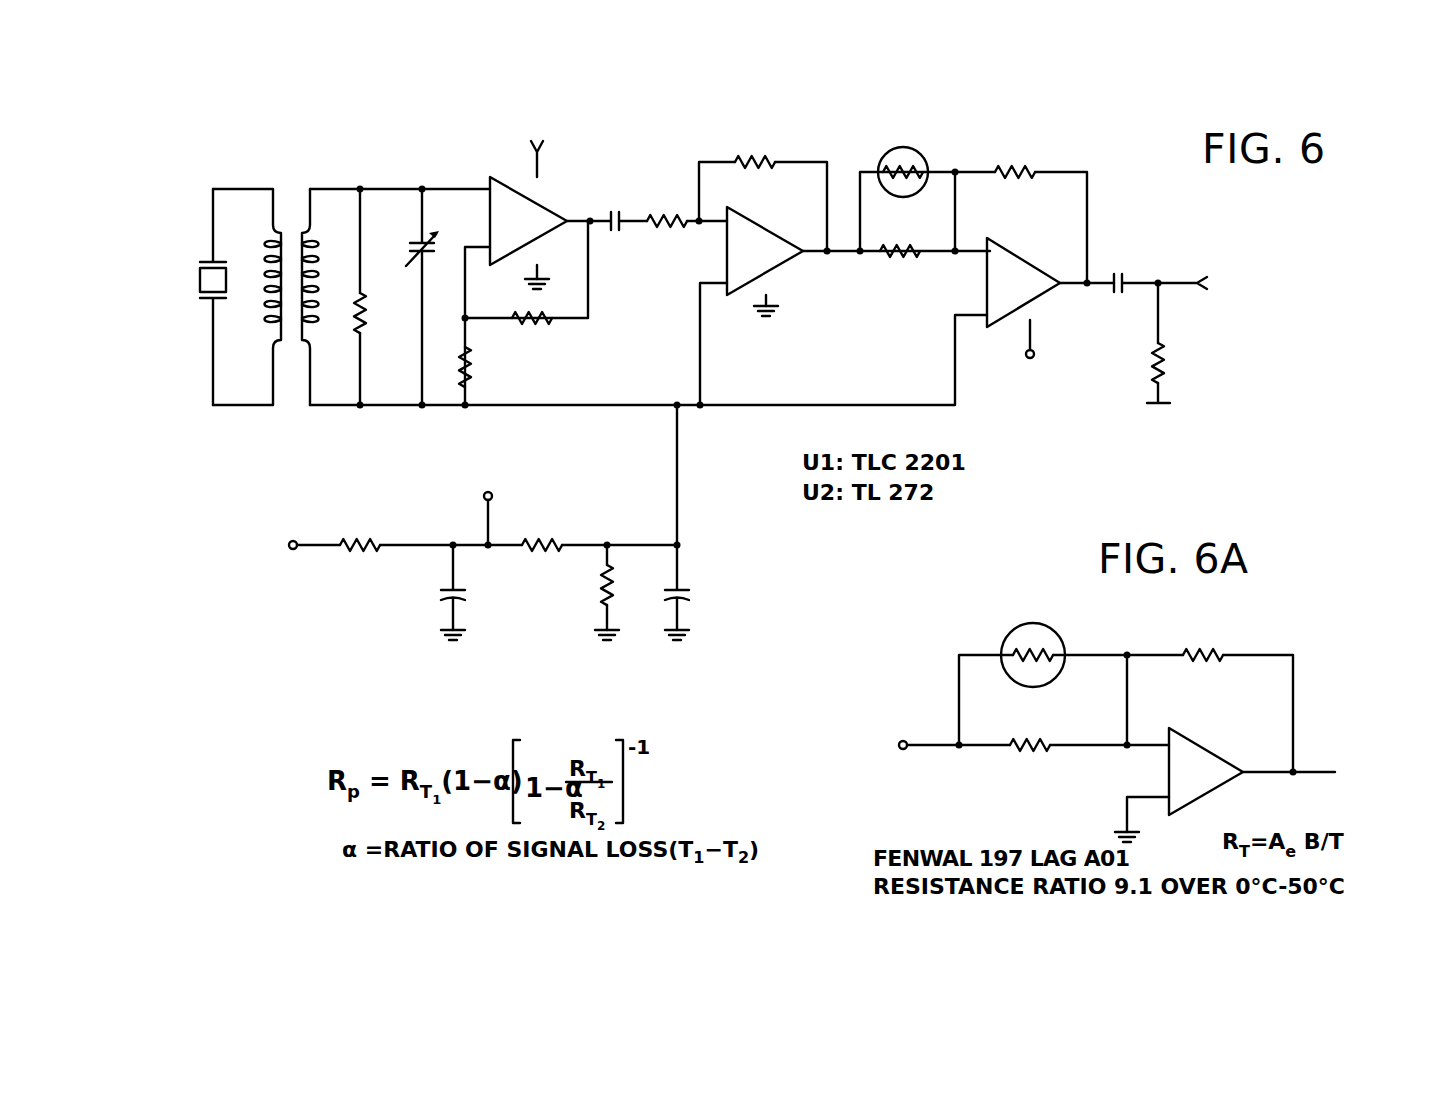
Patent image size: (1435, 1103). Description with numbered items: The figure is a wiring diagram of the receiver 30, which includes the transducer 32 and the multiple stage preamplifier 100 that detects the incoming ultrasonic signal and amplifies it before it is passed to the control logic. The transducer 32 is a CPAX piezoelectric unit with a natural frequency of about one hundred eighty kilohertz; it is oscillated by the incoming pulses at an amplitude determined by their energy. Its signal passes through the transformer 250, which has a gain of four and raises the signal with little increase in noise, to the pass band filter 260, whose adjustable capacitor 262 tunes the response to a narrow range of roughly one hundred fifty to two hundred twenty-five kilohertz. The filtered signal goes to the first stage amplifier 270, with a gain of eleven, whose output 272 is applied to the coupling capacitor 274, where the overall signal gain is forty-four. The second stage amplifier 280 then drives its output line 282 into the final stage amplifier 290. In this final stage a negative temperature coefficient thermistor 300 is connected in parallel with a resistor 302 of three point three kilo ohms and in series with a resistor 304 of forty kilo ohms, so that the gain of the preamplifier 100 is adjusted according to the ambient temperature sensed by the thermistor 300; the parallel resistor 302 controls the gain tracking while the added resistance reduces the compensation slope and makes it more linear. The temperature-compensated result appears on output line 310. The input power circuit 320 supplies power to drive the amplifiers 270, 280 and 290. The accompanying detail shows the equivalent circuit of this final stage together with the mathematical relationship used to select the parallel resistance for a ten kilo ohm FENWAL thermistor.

In FIG. 6, the receiver 30 is at (190, 156).
In FIG. 6, the transducer 32 is at (203, 306).
In FIG. 6, the preamplifier 100 is at (1093, 116).
In FIG. 6, the transformer 250 is at (288, 410).
In FIG. 6, the pass band filter 260 is at (431, 176).
In FIG. 6, the adjustable capacitor 262 is at (418, 246).
In FIG. 6, the first stage amplifier 270 is at (541, 176).
In FIG. 6, the output 272 is at (594, 228).
In FIG. 6, the coupling capacitor 274 is at (624, 218).
In FIG. 6, the second stage amplifier 280 is at (792, 140).
In FIG. 6, the output line 282 is at (840, 264).
In FIG. 6A, the output line 282 is at (935, 750).
In FIG. 6, the final stage amplifier 290 is at (997, 332).
In FIG. 6A, the final stage amplifier 290 is at (1205, 748).
In FIG. 6, the thermistor 300 is at (893, 193).
In FIG. 6A, the thermistor 300 is at (1035, 688).
In FIG. 6, the parallel resistor 302 is at (882, 262).
In FIG. 6A, the parallel resistor 302 is at (1053, 750).
In FIG. 6, the series resistor 304 is at (1027, 170).
In FIG. 6A, the series resistor 304 is at (1218, 655).
In FIG. 6, the output line 310 is at (1152, 283).
In FIG. 6A, the output line 310 is at (1318, 772).
In FIG. 6, the input power circuit 320 is at (577, 512).